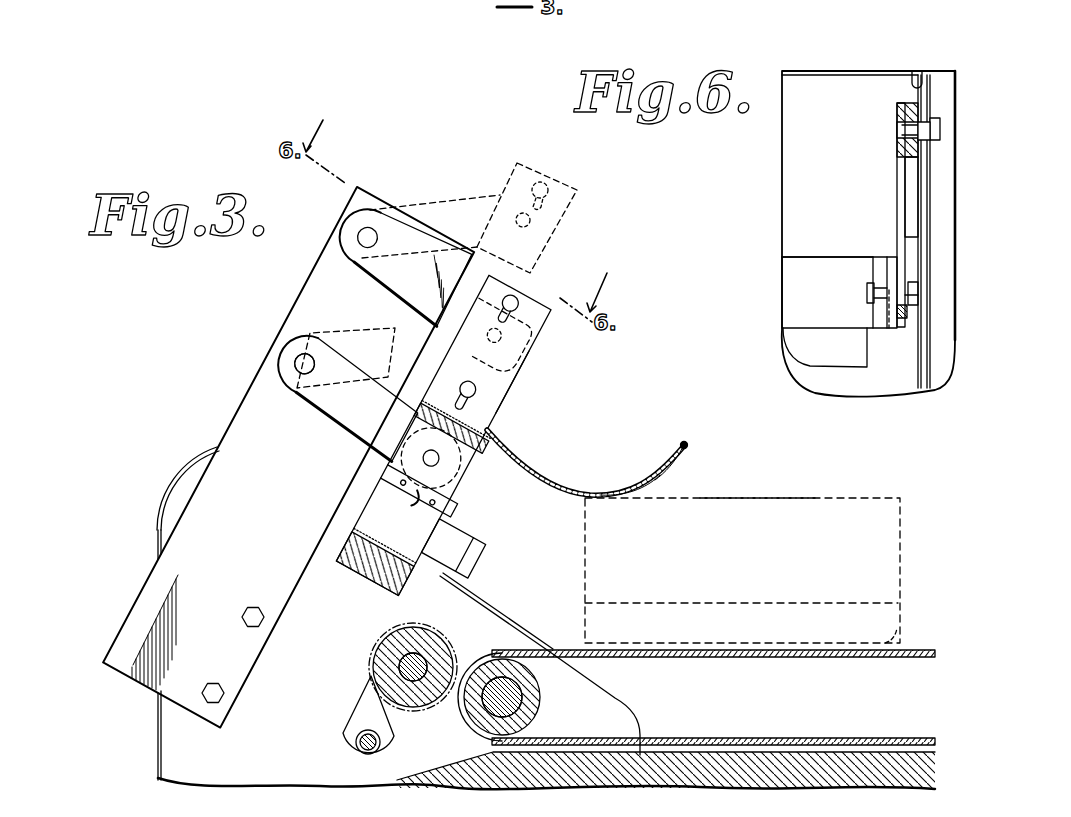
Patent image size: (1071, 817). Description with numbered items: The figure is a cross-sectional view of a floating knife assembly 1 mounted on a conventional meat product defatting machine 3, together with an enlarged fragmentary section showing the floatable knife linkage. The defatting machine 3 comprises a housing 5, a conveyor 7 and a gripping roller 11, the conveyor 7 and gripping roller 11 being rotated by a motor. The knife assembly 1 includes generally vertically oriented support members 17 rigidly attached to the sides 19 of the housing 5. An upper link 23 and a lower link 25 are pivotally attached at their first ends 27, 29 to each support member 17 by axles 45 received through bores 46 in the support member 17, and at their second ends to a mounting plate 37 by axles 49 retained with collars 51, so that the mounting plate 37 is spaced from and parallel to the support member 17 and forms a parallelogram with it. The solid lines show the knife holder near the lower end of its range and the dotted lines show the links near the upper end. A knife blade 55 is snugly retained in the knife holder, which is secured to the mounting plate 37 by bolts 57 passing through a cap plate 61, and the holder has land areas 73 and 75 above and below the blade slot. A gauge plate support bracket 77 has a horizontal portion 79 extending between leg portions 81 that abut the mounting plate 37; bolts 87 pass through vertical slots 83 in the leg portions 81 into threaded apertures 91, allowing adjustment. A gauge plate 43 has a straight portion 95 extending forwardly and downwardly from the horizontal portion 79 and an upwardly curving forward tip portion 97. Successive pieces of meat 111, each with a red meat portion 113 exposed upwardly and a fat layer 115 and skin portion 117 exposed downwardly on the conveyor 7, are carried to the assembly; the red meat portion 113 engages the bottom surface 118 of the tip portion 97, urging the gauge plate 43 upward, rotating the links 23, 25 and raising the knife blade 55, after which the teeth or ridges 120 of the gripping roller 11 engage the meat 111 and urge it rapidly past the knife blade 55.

In FIG. 3, the floating knife assembly 1 is at (223, 323).
In FIG. 3, the defatting machine 3 is at (152, 761).
In FIG. 6, the defatting machine 3 is at (784, 149).
In FIG. 3, the housing 5 is at (170, 713).
In FIG. 6, the housing 5 is at (950, 80).
In FIG. 3, the conveyor 7 is at (760, 657).
In FIG. 3, the gripping roller 11 is at (432, 703).
In FIG. 3, the support member 17 is at (305, 282).
In FIG. 6, the support member 17 is at (912, 102).
In FIG. 3, the sides 19 is at (386, 601).
In FIG. 6, the sides 19 is at (917, 72).
In FIG. 3, the upper link 23 is at (370, 210).
In FIG. 6, the upper link 23 is at (896, 189).
In FIG. 3, the lower link 25 is at (333, 333).
In FIG. 3, the first end of upper link 27 is at (356, 255).
In FIG. 3, the first end of lower link 29 is at (280, 372).
In FIG. 3, the mounting plate 37 is at (450, 458).
In FIG. 6, the mounting plate 37 is at (888, 258).
In FIG. 3, the gauge plate 43 is at (682, 446).
In FIG. 3, the axle 45 is at (341, 232).
In FIG. 6, the axle 45 is at (940, 131).
In FIG. 6, the bore 46 is at (924, 130).
In FIG. 6, the axle 49 is at (922, 293).
In FIG. 6, the collar 51 is at (908, 311).
In FIG. 3, the knife blade 55 is at (479, 552).
In FIG. 3, the bolt 57 is at (408, 504).
In FIG. 3, the cap plate 61 is at (445, 497).
In FIG. 3, the land area 73 is at (440, 581).
In FIG. 3, the land area 75 is at (410, 594).
In FIG. 3, the gauge plate support bracket 77 is at (512, 376).
In FIG. 6, the gauge plate support bracket 77 is at (815, 257).
In FIG. 3, the horizontal portion 79 is at (478, 437).
In FIG. 6, the horizontal portion 79 is at (792, 294).
In FIG. 3, the leg portion 81 is at (514, 364).
In FIG. 6, the leg portion 81 is at (876, 272).
In FIG. 3, the slot 83 is at (528, 332).
In FIG. 3, the bolt 87 is at (540, 178).
In FIG. 6, the bolt 87 is at (866, 298).
In FIG. 6, the threaded aperture 91 is at (889, 328).
In FIG. 3, the straight portion 95 is at (568, 490).
In FIG. 3, the forward tip portion 97 is at (644, 482).
In FIG. 3, the piece of meat 111 is at (828, 498).
In FIG. 3, the red meat portion 113 is at (762, 500).
In FIG. 3, the fat layer 115 is at (586, 612).
In FIG. 3, the skin portion 117 is at (900, 632).
In FIG. 3, the bottom surface 118 is at (662, 472).
In FIG. 3, the teeth or ridges 120 is at (382, 645).